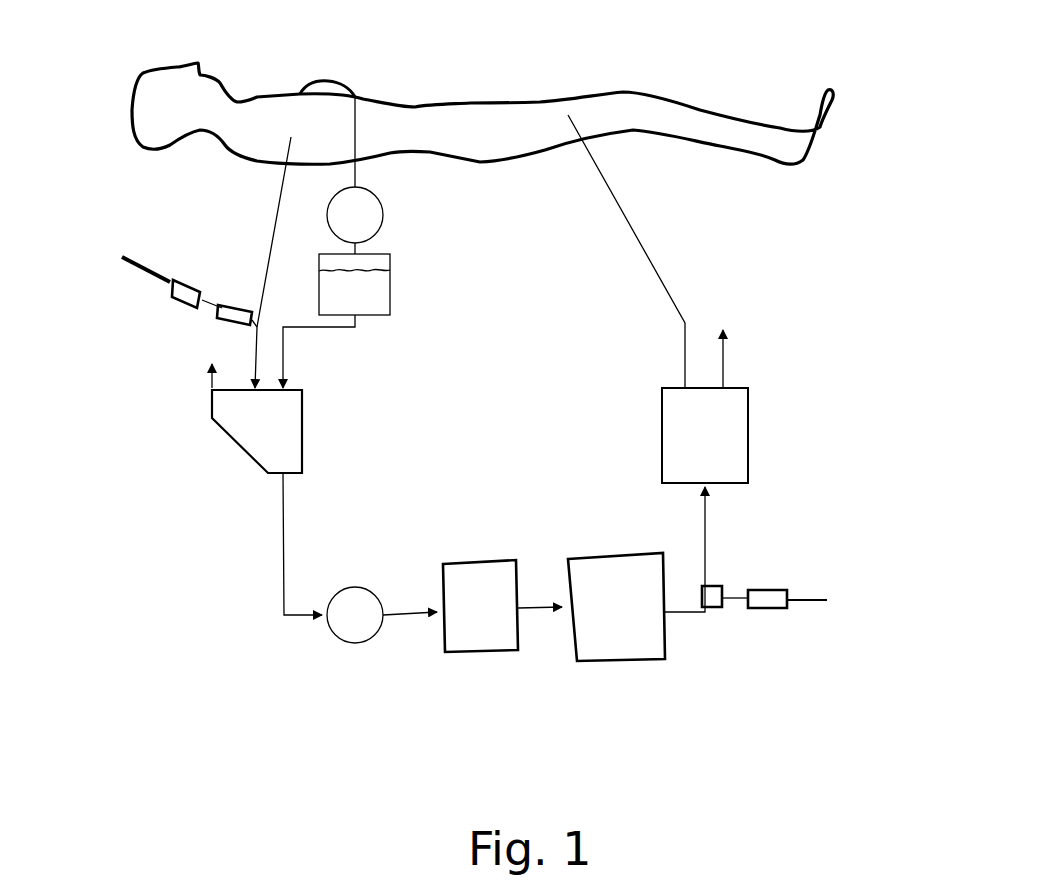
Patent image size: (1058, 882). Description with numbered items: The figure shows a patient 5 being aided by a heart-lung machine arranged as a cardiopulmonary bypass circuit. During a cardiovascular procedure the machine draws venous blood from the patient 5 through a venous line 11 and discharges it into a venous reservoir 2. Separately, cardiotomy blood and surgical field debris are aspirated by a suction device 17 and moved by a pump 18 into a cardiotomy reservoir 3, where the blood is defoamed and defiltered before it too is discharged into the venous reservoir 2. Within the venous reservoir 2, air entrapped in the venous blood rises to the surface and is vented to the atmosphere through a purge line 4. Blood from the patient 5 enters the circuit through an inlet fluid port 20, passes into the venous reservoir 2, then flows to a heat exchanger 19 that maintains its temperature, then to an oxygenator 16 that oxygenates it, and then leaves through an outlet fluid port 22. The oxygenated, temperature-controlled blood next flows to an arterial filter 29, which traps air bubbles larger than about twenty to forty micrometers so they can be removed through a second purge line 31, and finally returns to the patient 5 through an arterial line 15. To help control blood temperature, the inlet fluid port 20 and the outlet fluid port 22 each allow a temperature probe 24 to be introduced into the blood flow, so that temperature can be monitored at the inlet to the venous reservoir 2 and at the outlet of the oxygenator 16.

The venous reservoir 2 is at (243, 440).
The cardiotomy reservoir 3 is at (383, 288).
The purge line 4 is at (205, 372).
The patient 5 is at (472, 103).
The venous line 11 is at (267, 250).
The arterial line 15 is at (635, 236).
The oxygenator 16 is at (615, 641).
The suction device 17 is at (318, 79).
The pump 18 is at (373, 222).
The heat exchanger 19 is at (483, 640).
The inlet fluid port 20 is at (193, 278).
The outlet fluid port 22 is at (762, 610).
The temperature probe 24 is at (127, 250).
The arterial filter 29 is at (745, 452).
The purge line 31 is at (727, 370).